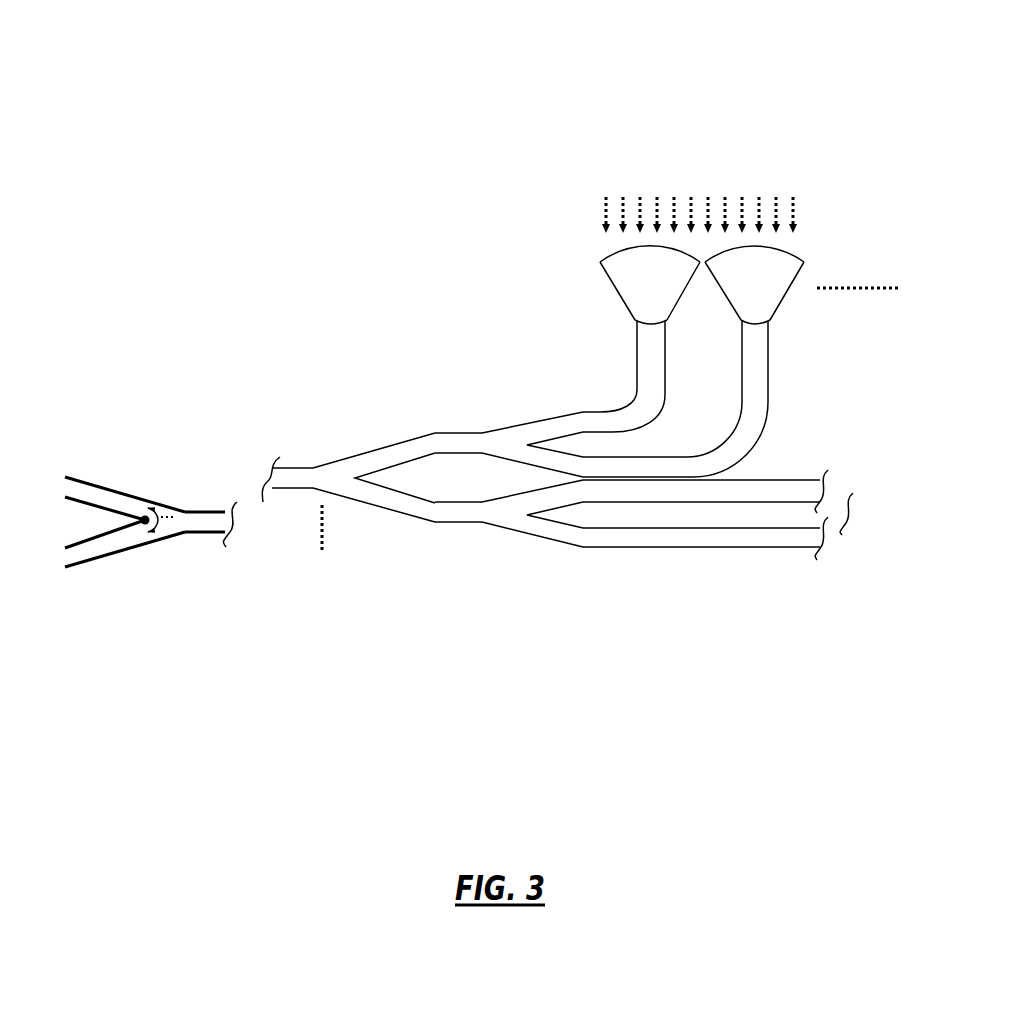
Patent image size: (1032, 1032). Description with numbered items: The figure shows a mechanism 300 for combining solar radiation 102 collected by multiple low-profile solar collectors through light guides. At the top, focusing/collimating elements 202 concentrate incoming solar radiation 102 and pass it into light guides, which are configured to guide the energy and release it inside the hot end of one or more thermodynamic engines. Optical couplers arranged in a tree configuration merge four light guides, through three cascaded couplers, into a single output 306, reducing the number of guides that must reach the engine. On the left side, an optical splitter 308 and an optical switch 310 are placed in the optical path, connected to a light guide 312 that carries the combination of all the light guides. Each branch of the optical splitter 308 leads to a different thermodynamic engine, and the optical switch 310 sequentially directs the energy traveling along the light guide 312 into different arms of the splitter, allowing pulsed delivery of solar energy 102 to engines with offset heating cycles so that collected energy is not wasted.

The mechanism 300 is at (520, 74).
The solar radiation 102 is at (815, 195).
The focusing/collimating elements 202 is at (783, 298).
The single output 306 is at (305, 467).
The optical splitter 308 is at (181, 533).
The optical switch 310 is at (160, 507).
The light guide 312 is at (202, 533).